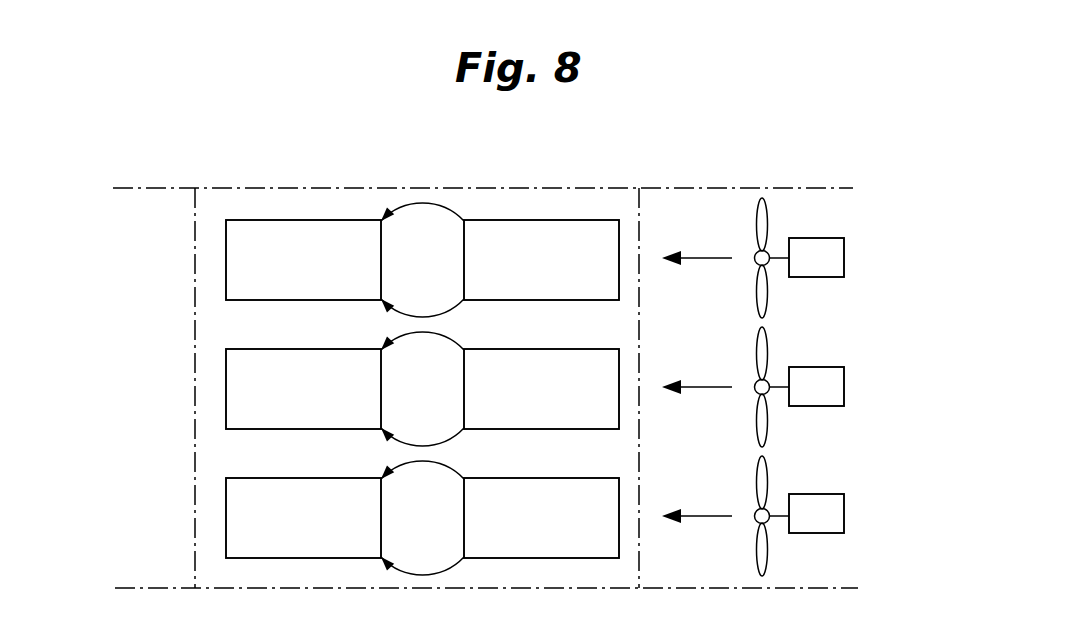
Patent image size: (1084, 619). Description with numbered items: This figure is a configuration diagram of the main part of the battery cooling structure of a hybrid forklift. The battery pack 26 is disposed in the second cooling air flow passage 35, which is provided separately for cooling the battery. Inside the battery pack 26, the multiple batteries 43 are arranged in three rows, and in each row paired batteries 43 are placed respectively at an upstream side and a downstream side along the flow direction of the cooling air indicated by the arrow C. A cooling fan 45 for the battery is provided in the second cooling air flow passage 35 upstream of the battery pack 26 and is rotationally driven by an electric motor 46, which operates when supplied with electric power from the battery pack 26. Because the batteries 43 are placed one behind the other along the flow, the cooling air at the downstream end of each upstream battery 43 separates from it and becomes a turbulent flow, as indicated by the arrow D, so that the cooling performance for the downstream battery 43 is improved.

The battery pack 26 is at (640, 228).
The second cooling air flow passage 35 is at (655, 193).
The battery 43 is at (294, 220).
The cooling fan 45 is at (768, 218).
The electric motor 46 is at (844, 256).
The arrow indicating flow direction of cooling air C is at (703, 257).
The arrow indicating turbulent flow D is at (423, 204).